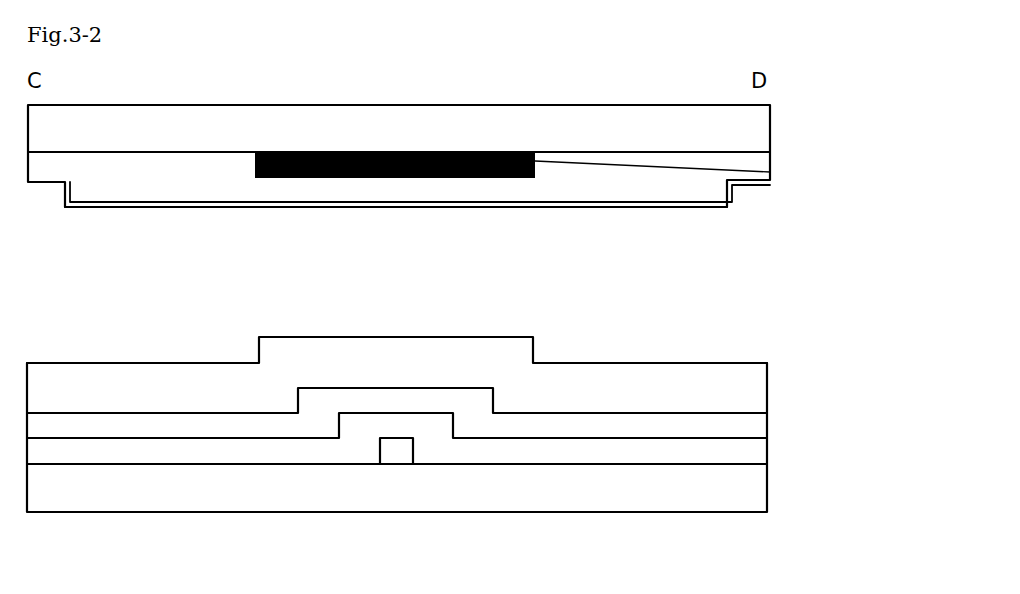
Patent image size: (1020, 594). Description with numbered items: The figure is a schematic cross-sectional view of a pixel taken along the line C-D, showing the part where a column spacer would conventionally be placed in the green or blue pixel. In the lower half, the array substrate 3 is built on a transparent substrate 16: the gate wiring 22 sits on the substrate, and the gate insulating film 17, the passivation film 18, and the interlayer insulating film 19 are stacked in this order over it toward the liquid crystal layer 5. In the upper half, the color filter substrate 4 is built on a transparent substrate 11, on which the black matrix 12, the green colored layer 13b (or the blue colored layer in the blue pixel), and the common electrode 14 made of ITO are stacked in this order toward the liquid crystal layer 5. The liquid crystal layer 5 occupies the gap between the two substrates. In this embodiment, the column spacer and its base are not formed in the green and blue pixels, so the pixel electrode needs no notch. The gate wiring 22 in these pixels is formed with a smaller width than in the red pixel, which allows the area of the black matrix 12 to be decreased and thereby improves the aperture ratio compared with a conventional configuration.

The array substrate 3 is at (449, 454).
The color filter substrate 4 is at (457, 175).
The liquid crystal layer 5 is at (746, 222).
The transparent substrate 11 is at (752, 135).
The black matrix 12 is at (770, 170).
The green colored layer 13b is at (718, 200).
The common electrode 14 is at (446, 226).
The transparent substrate 16 is at (755, 490).
The gate insulating film 17 is at (755, 454).
The passivation film 18 is at (755, 427).
The interlayer insulating film 19 is at (755, 390).
The gate wiring 22 is at (393, 450).